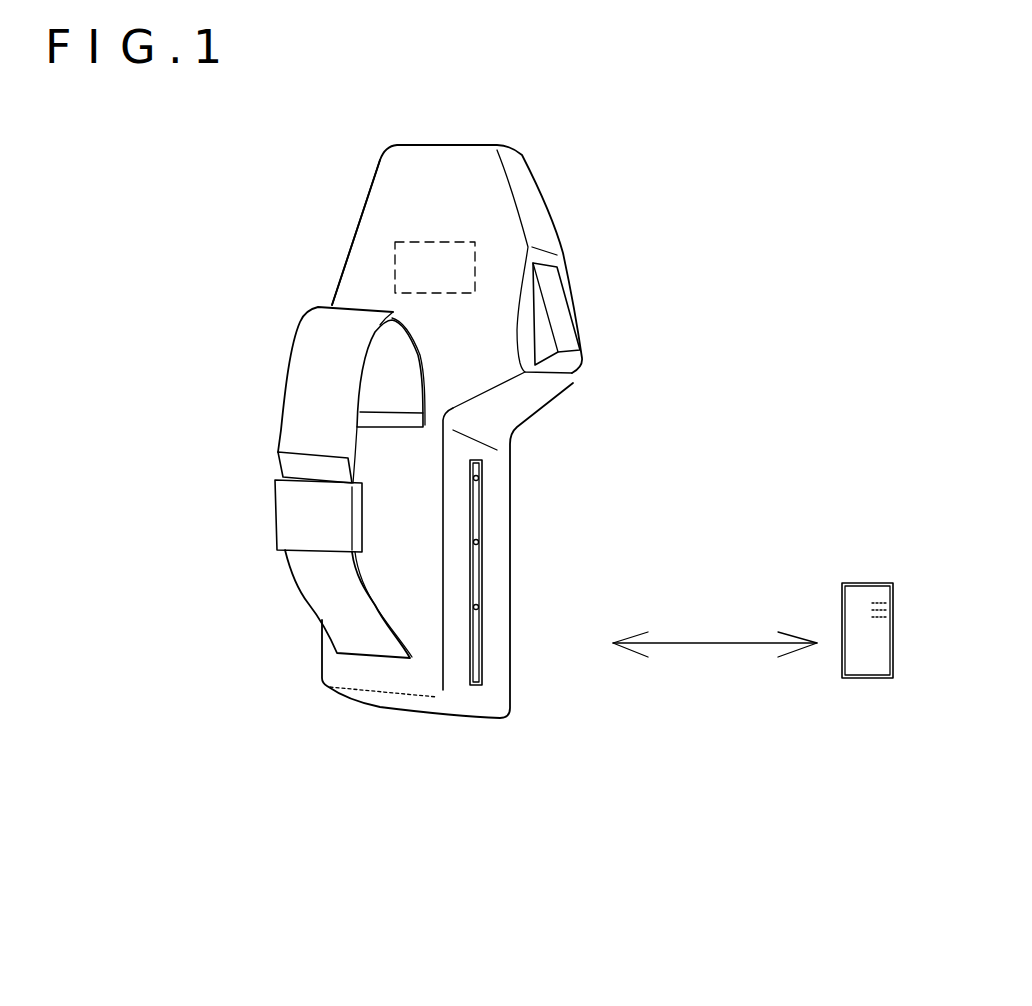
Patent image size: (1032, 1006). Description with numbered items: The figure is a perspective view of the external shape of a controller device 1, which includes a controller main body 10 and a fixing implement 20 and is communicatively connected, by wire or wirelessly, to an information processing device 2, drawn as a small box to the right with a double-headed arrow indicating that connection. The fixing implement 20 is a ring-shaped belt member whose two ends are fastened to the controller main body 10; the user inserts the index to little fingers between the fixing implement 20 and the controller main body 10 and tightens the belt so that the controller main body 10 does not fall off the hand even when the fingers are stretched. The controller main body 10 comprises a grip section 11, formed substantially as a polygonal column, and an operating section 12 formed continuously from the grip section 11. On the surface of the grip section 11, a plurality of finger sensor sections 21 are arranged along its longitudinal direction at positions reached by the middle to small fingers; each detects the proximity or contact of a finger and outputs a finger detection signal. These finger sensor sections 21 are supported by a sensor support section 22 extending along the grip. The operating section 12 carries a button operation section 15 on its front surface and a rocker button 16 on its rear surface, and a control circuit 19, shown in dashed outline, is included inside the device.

The controller device 1 is at (363, 745).
The information processing device 2 is at (867, 678).
The controller main body 10 is at (540, 703).
The grip section 11 is at (530, 465).
The operating section 12 is at (558, 162).
The button operation section 15 is at (332, 220).
The rocker button 16 is at (562, 313).
The control circuit 19 is at (435, 267).
The fixing implement 20 is at (313, 582).
The finger sensor sections 21 is at (480, 480).
The sensor support section 22 is at (470, 663).